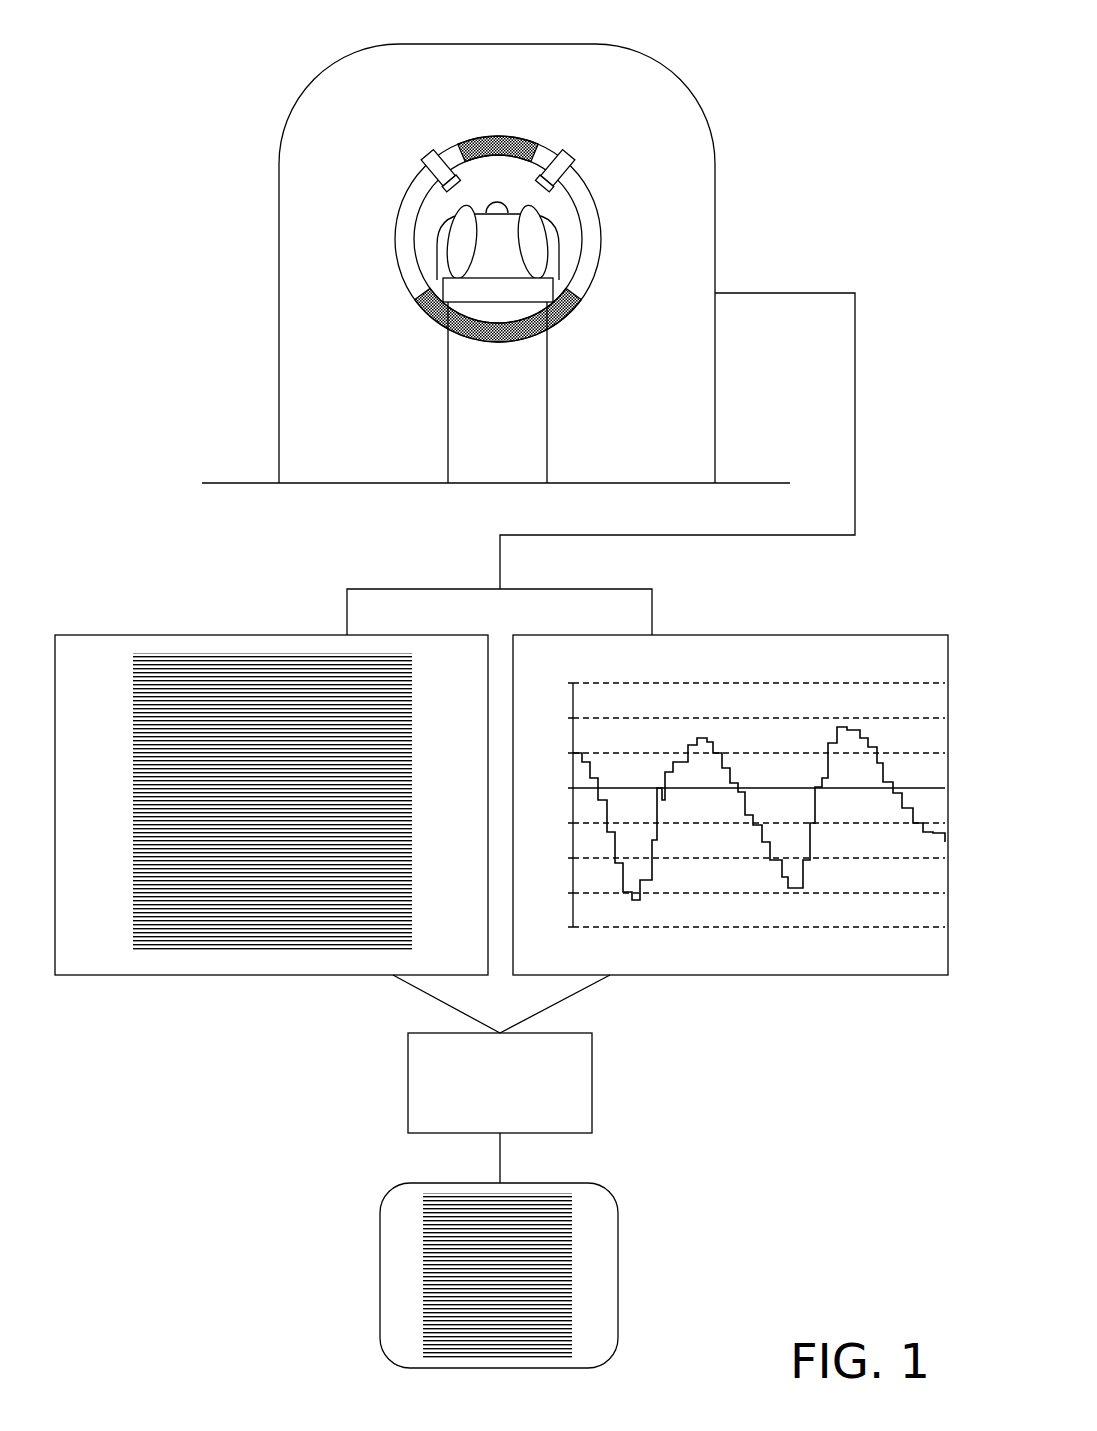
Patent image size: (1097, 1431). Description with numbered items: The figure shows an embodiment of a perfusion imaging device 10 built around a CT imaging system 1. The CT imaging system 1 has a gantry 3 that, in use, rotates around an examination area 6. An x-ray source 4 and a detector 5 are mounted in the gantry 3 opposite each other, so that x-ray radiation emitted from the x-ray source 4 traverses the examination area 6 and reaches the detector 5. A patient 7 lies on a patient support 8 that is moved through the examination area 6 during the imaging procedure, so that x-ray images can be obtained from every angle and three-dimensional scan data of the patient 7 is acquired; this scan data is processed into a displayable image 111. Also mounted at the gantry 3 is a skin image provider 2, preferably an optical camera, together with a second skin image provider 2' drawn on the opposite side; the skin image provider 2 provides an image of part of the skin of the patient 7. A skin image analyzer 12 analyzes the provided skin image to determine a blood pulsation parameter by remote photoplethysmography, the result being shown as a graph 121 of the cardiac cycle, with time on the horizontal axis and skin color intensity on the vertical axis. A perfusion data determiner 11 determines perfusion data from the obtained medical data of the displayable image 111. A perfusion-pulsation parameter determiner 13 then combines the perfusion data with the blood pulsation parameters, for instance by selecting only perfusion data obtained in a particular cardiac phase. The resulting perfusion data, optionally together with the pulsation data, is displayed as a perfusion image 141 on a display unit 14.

The perfusion imaging device 10 is at (838, 95).
The CT imaging system 1 is at (715, 215).
The skin image provider 2 is at (560, 138).
The further detector 2' is at (434, 138).
The gantry 3 is at (580, 191).
The x-ray source 4 is at (499, 134).
The detector 5 is at (431, 320).
The examination area 6 is at (428, 229).
The patient 7 is at (570, 227).
The patient support 8 is at (550, 289).
The perfusion data determiner 11 is at (110, 635).
The displayable image 111 is at (217, 790).
The skin image analyzer 12 is at (888, 635).
The graph 121 is at (823, 810).
The perfusion-pulsation parameter determiner 13 is at (408, 1085).
The display unit 14 is at (380, 1236).
The perfusion image 141 is at (470, 1288).